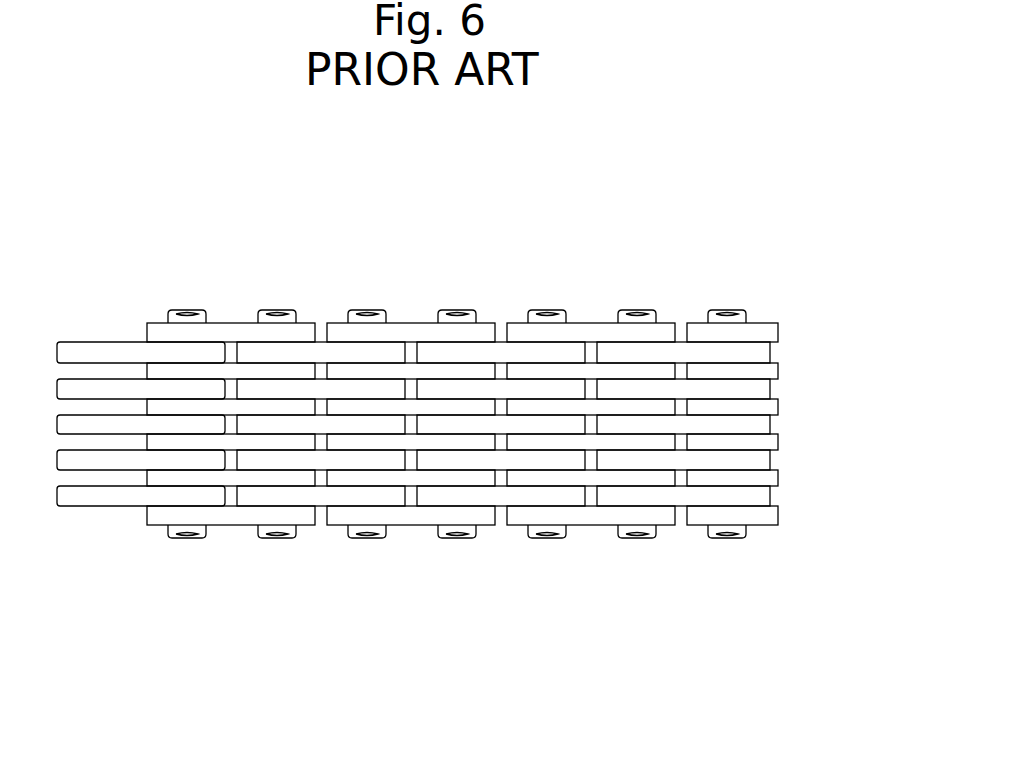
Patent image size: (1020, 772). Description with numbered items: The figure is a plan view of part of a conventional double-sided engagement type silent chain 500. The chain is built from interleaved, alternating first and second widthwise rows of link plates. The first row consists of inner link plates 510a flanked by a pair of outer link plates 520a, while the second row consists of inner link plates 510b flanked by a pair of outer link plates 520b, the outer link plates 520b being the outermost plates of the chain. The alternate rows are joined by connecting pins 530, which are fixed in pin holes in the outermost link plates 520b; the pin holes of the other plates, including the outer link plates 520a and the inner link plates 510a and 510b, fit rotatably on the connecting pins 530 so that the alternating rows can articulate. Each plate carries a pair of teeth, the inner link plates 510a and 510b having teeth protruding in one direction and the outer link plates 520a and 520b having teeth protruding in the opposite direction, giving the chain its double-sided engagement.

The double-sided engagement type silent chain 500 is at (645, 272).
The inner link plate 510a is at (448, 390).
The inner link plate 510b is at (428, 372).
The outer link plate 520a is at (340, 350).
The outer link plate 520b is at (247, 326).
The connecting pin 530 is at (560, 313).